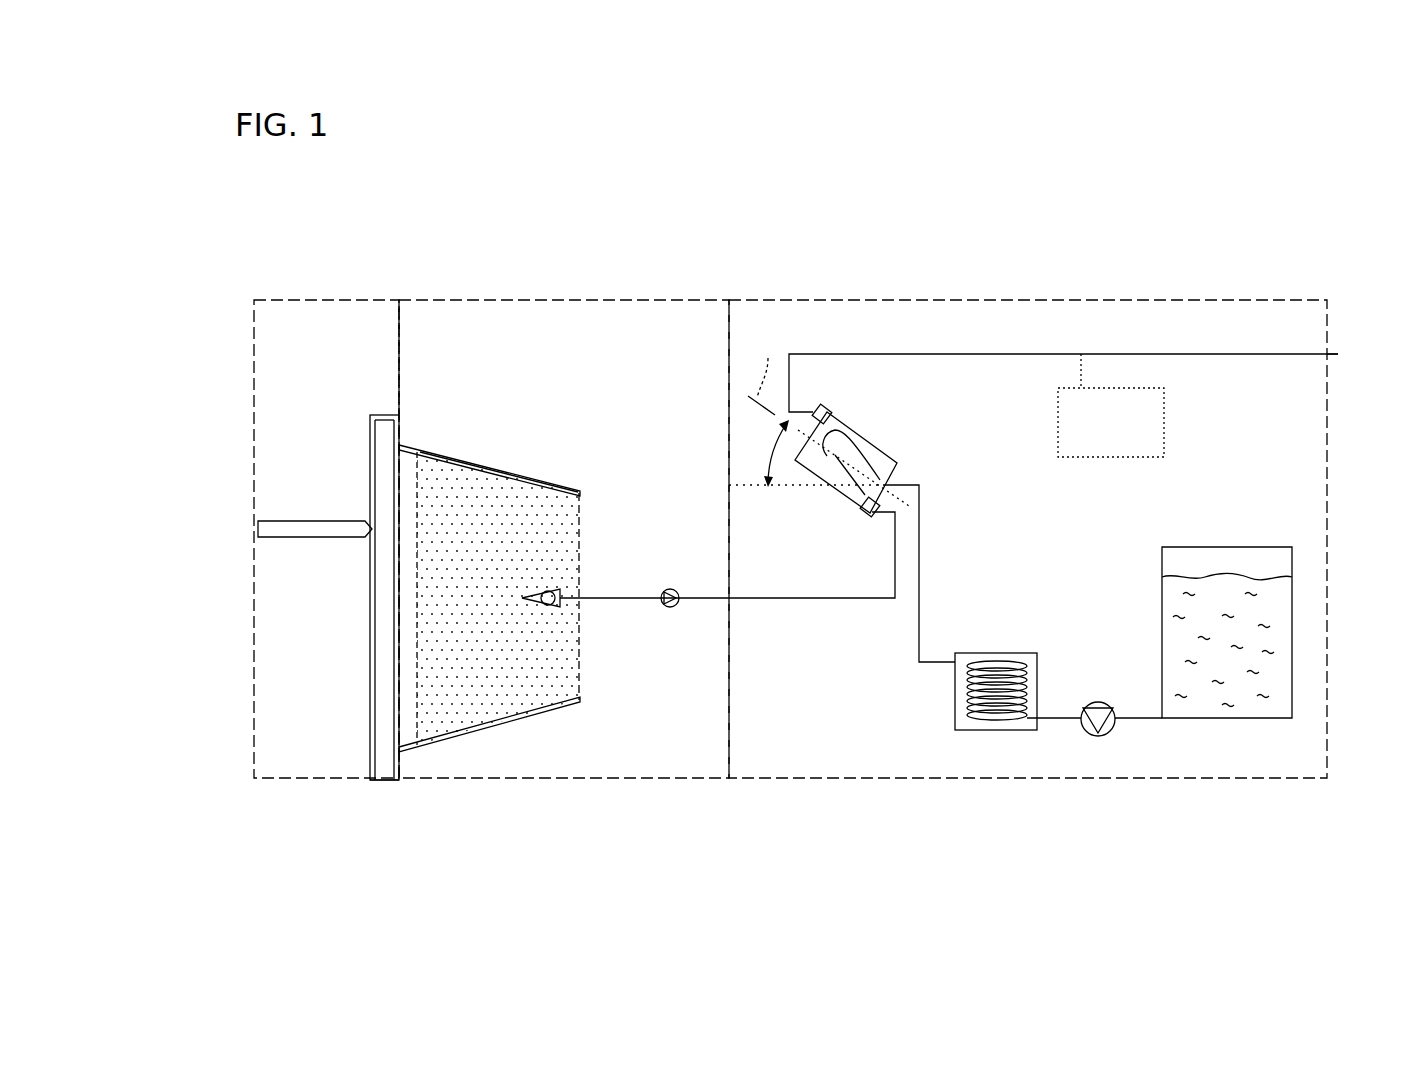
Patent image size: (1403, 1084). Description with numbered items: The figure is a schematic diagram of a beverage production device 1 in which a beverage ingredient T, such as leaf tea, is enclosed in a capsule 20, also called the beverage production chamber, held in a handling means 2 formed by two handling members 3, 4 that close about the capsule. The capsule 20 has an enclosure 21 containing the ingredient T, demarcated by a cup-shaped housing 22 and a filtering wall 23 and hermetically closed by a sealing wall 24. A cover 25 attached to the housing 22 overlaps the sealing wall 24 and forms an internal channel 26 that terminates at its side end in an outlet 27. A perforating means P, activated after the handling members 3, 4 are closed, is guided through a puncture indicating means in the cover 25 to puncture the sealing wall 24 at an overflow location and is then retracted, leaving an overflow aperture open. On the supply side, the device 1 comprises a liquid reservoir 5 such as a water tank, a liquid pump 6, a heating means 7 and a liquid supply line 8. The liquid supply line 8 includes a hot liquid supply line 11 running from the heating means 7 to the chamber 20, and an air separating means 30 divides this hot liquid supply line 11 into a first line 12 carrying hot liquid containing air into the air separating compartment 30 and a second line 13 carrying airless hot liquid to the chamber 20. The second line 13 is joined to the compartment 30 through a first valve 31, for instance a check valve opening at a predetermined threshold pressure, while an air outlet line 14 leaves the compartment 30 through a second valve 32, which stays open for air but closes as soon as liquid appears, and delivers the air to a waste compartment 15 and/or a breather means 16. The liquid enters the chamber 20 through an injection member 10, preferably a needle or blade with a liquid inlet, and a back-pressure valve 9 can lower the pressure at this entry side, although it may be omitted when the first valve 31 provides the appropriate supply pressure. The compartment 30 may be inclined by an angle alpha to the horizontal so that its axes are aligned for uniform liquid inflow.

The beverage production device 1 is at (1158, 200).
The handling means 2 is at (401, 292).
The handling member 3 is at (648, 298).
The handling member 4 is at (290, 298).
The liquid reservoir 5 is at (1268, 672).
The liquid pump 6 is at (1110, 733).
The heating means 7 is at (985, 730).
The liquid supply line 8 is at (1028, 594).
The hot liquid supply line 11 is at (876, 655).
The back-pressure valve 9 is at (670, 607).
The injection member 10 is at (548, 605).
The first line 12 is at (919, 560).
The second line 13 is at (800, 597).
The air outlet line 14 is at (950, 353).
The waste compartment 15 is at (1140, 422).
The breather means 16 is at (1333, 353).
The capsule 20 is at (478, 452).
The enclosure 21 is at (474, 668).
The cup-shaped housing 22 is at (538, 483).
The filtering wall 23 is at (414, 716).
The sealing wall 24 is at (388, 618).
The cover 25 is at (364, 462).
The internal channel 26 is at (382, 698).
The outlet 27 is at (385, 783).
The air separating means 30 is at (886, 440).
The first valve 31 is at (864, 520).
The second valve 32 is at (830, 410).
The perforating means P is at (270, 528).
The beverage ingredient T is at (528, 672).